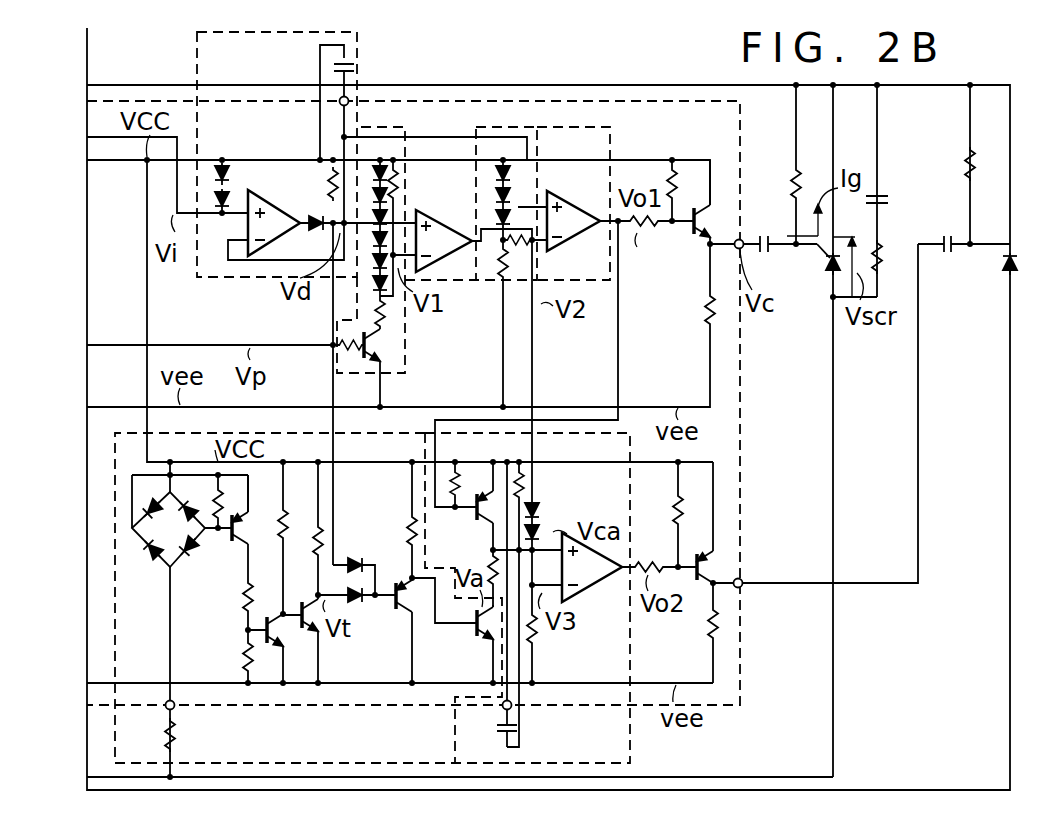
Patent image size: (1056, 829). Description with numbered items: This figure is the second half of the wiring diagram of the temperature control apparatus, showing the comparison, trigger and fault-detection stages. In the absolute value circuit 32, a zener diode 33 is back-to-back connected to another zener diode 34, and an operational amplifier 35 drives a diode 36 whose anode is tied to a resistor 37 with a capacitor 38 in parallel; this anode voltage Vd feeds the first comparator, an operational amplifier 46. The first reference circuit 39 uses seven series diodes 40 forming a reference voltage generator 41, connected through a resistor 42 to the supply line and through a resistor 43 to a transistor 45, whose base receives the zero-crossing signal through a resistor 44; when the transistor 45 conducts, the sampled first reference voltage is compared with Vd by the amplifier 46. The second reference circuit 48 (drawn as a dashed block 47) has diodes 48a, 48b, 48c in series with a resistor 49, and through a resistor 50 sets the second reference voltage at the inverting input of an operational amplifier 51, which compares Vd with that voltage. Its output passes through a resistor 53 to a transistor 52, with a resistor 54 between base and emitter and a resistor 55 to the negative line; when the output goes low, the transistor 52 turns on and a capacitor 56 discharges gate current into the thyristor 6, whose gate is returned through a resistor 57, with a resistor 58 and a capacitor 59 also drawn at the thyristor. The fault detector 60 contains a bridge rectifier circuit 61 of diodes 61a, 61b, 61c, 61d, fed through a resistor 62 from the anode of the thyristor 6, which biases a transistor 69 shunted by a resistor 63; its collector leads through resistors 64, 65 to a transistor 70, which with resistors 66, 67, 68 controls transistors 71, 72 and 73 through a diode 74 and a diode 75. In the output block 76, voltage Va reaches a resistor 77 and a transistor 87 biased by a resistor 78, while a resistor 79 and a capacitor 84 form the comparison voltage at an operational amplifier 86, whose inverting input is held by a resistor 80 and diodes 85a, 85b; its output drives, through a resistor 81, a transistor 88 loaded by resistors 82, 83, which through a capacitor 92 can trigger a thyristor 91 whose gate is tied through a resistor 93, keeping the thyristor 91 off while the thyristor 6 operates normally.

The thyristor 6 is at (829, 278).
The absolute value circuit 32 is at (197, 55).
The zener diode 33 is at (228, 172).
The zener diode 34 is at (218, 210).
The operational amplifier 35 is at (265, 207).
The diode 36 is at (326, 235).
The resistor 37 is at (327, 186).
The capacitor 38 is at (360, 66).
The first reference circuit 39 is at (405, 127).
The series diodes 40 is at (370, 190).
The reference voltage generator 41 is at (368, 262).
The resistor 42 is at (400, 182).
The resistor 43 is at (386, 318).
The resistor 44 is at (347, 353).
The transistor 45 is at (384, 350).
The operational amplifier 46 is at (447, 220).
The diode circuit 47 is at (503, 127).
The second reference circuit 48 is at (512, 205).
The diode 48a is at (508, 173).
The diode 48b is at (500, 196).
The diode 48c is at (512, 217).
The resistor 49 is at (500, 270).
The resistor 50 is at (522, 246).
The operational amplifier 51 is at (583, 207).
The transistor 52 is at (688, 238).
The resistor 53 is at (642, 235).
The resistor 54 is at (672, 165).
The resistor 55 is at (706, 310).
The capacitor 56 is at (770, 254).
The resistor 57 is at (792, 174).
The resistor 58 is at (882, 250).
The capacitor 59 is at (888, 198).
The fault detector 60 is at (256, 763).
The bridge rectifier circuit 61 is at (124, 558).
The diode 61a is at (186, 510).
The diode 61b is at (150, 550).
The diode 61c is at (150, 508).
The diode 61d is at (190, 550).
The resistor 62 is at (180, 730).
The resistor 63 is at (223, 497).
The resistor 64 is at (246, 598).
The resistor 65 is at (245, 655).
The resistor 66 is at (287, 520).
The resistor 67 is at (322, 530).
The resistor 68 is at (408, 523).
The transistor 69 is at (228, 540).
The transistor 70 is at (271, 608).
The transistor 71 is at (300, 602).
The transistor 72 is at (398, 578).
The transistor 73 is at (473, 636).
The diode 74 is at (362, 604).
The diode 75 is at (355, 563).
The output circuit 76 is at (551, 763).
The resistor 77 is at (492, 556).
The resistor 78 is at (459, 472).
The resistor 79 is at (532, 466).
The resistor 80 is at (535, 643).
The resistor 81 is at (652, 562).
The resistor 82 is at (705, 628).
The resistor 83 is at (675, 515).
The capacitor 84 is at (497, 726).
The diode 85a is at (536, 505).
The diode 85b is at (536, 527).
The operational amplifier 86 is at (603, 586).
The transistor 87 is at (470, 506).
The transistor 88 is at (714, 563).
The thyristor 91 is at (1016, 265).
The capacitor 92 is at (947, 254).
The resistor 93 is at (966, 154).